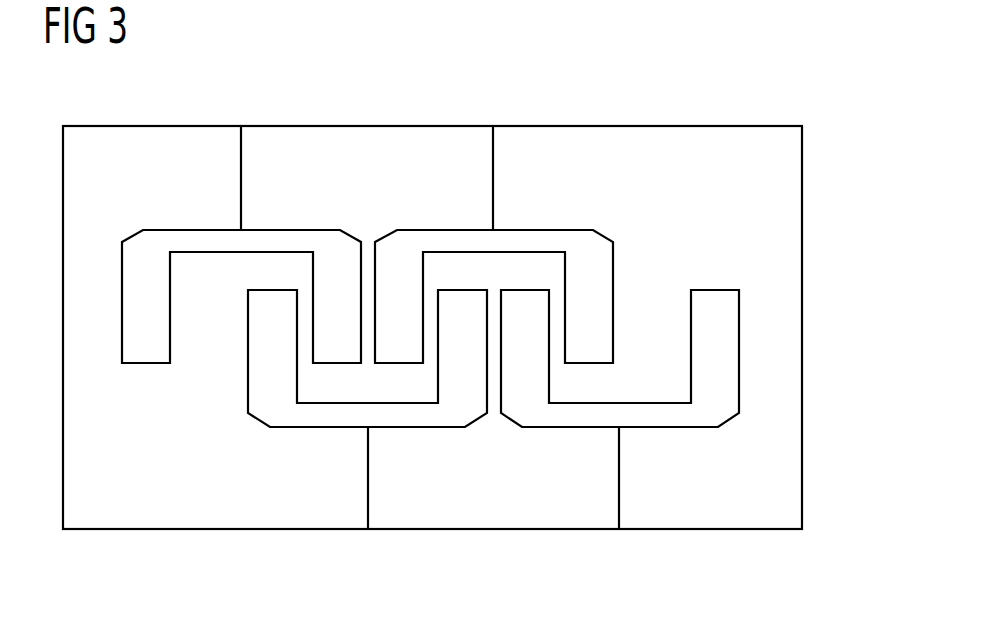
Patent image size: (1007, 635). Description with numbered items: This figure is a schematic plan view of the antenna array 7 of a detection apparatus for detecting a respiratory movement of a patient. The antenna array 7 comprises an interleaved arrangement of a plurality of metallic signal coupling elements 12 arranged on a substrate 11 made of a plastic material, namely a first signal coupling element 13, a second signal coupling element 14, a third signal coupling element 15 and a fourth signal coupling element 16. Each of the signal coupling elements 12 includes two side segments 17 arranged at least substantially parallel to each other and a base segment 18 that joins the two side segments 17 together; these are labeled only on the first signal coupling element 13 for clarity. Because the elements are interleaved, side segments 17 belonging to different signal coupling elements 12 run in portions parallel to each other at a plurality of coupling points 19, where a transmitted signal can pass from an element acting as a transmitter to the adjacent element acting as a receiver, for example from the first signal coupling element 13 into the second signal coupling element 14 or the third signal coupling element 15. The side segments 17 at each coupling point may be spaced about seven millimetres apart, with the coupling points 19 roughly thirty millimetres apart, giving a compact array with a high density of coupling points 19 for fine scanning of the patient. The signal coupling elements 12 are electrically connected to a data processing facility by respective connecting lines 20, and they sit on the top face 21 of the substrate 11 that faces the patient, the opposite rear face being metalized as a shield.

The antenna array 7 is at (802, 162).
The substrate 11 is at (783, 207).
The top face 21 is at (432, 327).
The signal coupling elements 12 is at (430, 332).
The first signal coupling element 13 is at (560, 430).
The second signal coupling element 14 is at (437, 230).
The third signal coupling element 15 is at (287, 430).
The fourth signal coupling element 16 is at (165, 230).
The side segments 17 is at (530, 310).
The base segment 18 is at (657, 413).
The coupling points 19 is at (367, 256).
The connecting lines 20 is at (241, 155).